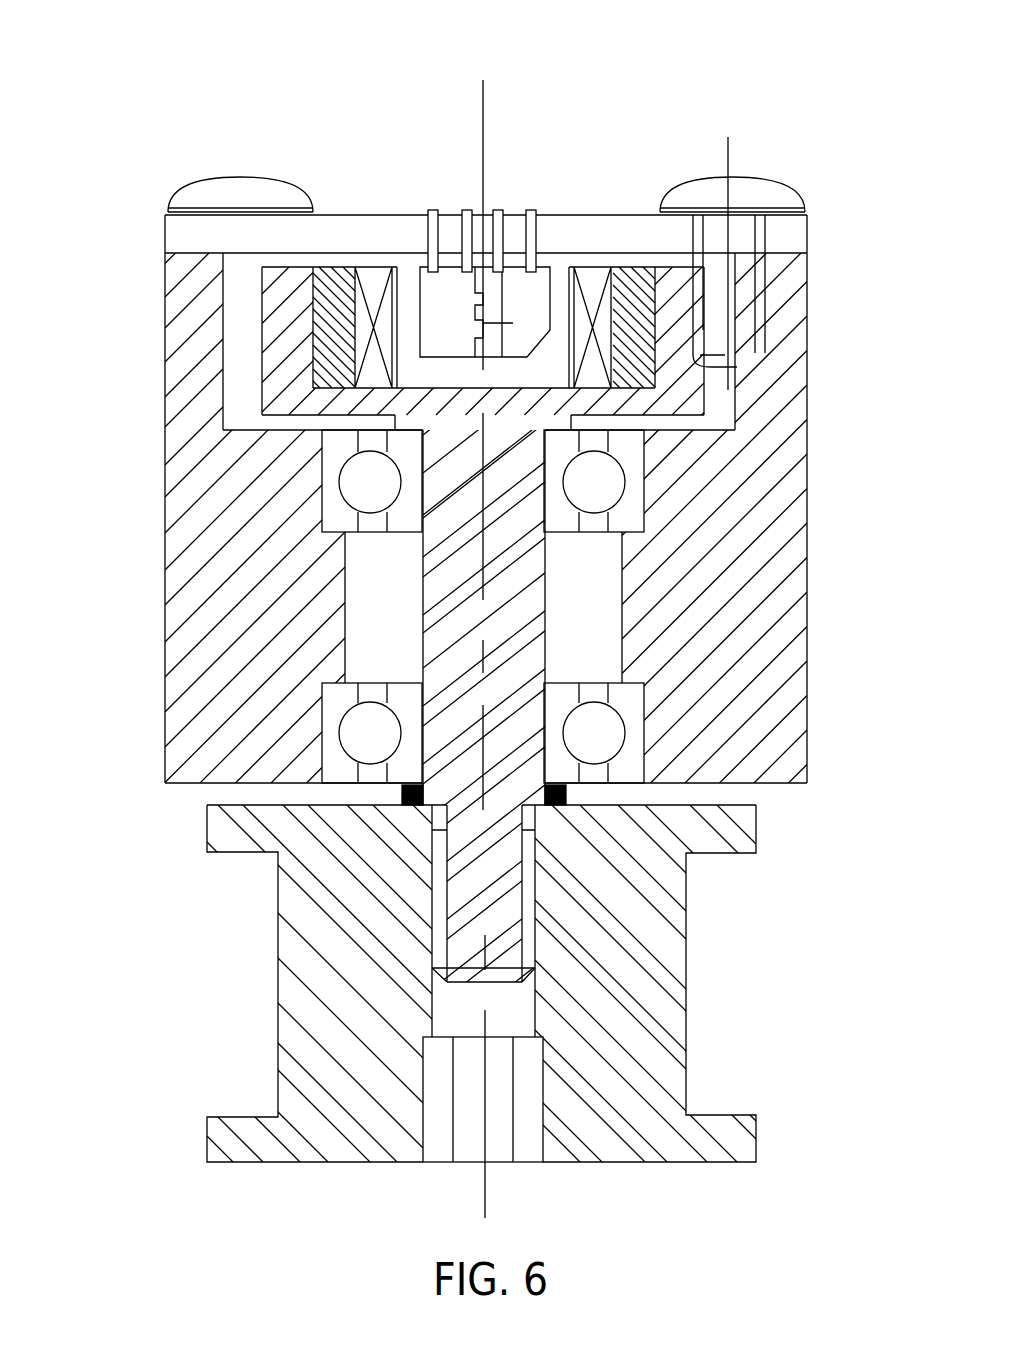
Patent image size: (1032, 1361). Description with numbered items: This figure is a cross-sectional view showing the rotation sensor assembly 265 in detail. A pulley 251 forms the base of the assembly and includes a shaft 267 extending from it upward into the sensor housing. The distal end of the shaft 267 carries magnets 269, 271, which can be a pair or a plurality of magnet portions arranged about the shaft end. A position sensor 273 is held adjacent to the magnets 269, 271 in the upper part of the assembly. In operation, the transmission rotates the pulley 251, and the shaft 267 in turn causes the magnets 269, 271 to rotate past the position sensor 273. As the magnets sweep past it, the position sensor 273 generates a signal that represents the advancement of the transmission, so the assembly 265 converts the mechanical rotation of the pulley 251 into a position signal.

The pulley 251 is at (688, 912).
The rotation sensor assembly 265 is at (826, 512).
The shaft 267 is at (370, 645).
The magnet 269 is at (270, 337).
The magnet 271 is at (650, 272).
The position sensor 273 is at (540, 283).